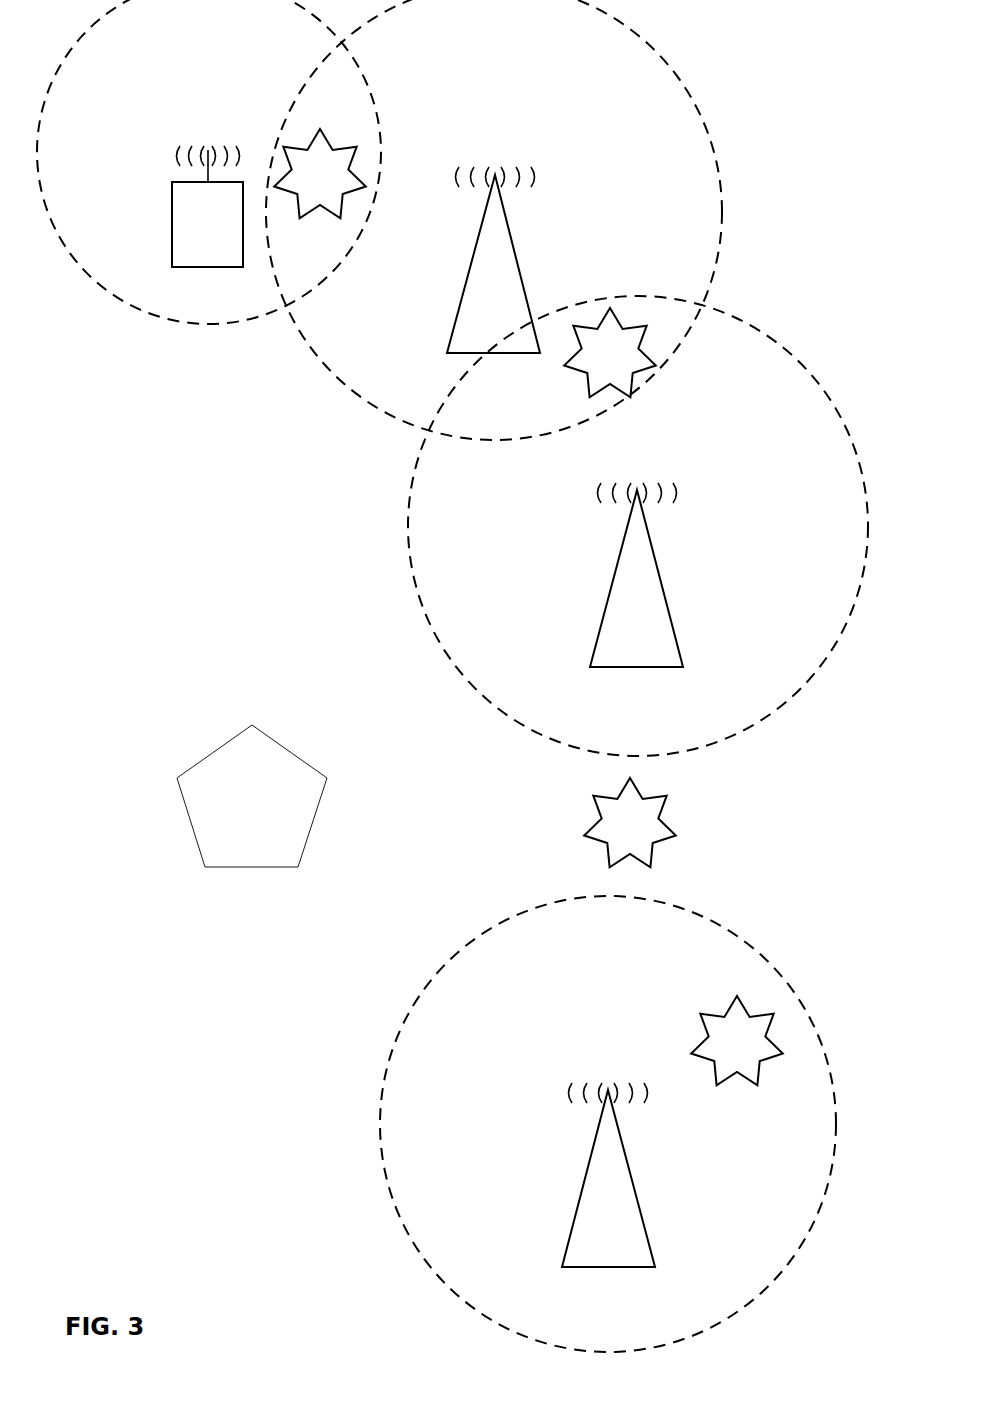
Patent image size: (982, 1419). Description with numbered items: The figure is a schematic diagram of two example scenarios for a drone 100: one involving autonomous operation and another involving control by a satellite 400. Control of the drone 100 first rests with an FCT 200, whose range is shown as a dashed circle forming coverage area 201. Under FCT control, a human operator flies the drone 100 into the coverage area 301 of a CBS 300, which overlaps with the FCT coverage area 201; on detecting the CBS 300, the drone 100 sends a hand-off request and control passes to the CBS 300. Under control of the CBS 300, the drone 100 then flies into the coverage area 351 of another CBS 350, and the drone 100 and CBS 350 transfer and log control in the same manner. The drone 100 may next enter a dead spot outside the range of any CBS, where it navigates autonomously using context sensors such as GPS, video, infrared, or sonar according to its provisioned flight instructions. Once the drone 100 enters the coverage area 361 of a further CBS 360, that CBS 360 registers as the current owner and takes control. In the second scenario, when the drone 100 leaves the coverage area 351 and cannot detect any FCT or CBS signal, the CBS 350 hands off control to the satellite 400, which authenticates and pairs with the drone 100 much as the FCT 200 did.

The drone 100 is at (303, 187).
The FCT 200 is at (189, 251).
The coverage area of FCT 201 is at (204, 325).
The CBS 300 is at (476, 320).
The coverage area of CBS 301 is at (314, 352).
The CBS 350 is at (618, 635).
The coverage area of CBS 351 is at (408, 522).
The CBS 360 is at (589, 1233).
The coverage area of CBS 361 is at (380, 1122).
The satellite 400 is at (233, 822).